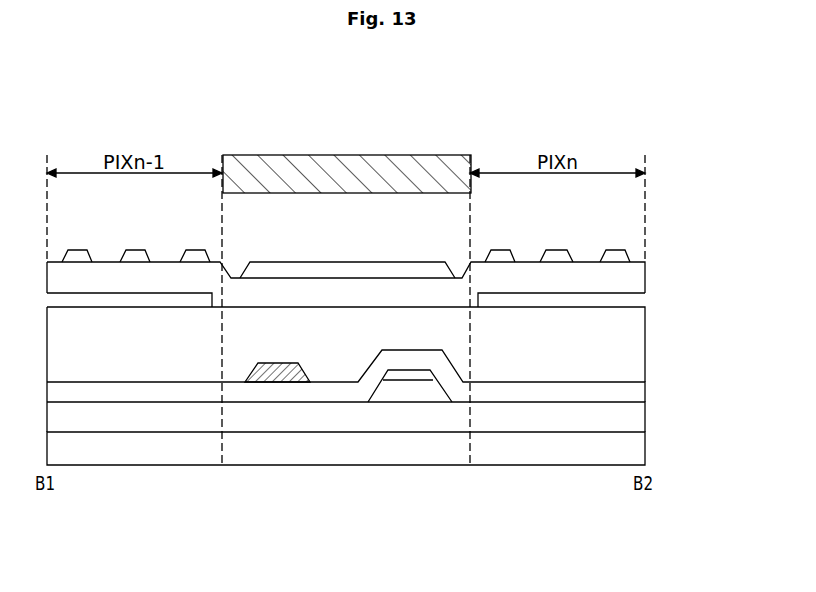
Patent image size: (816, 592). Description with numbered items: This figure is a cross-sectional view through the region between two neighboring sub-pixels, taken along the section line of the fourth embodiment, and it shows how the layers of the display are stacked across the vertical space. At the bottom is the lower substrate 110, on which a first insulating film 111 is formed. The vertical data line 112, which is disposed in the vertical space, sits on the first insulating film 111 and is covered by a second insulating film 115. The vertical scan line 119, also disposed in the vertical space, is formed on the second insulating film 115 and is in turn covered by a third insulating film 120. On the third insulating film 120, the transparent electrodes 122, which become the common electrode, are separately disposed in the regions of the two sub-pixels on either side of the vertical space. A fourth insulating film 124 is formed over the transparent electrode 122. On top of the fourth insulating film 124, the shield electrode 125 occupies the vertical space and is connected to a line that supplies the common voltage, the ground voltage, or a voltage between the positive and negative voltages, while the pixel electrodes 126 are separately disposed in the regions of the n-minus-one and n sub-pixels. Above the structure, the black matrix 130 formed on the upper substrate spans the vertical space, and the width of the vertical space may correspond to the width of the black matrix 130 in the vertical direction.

The lower substrate 110 is at (635, 448).
The first insulating film 111 is at (635, 418).
The vertical data line 112 is at (407, 392).
The second insulating film 115 is at (635, 392).
The vertical scan line 119 is at (273, 380).
The third insulating film 120 is at (635, 347).
The transparent electrode 122 is at (635, 302).
The fourth insulating film 124 is at (635, 275).
The shield electrode 125 is at (333, 270).
The pixel electrode 126 is at (620, 258).
The black matrix 130 is at (343, 165).